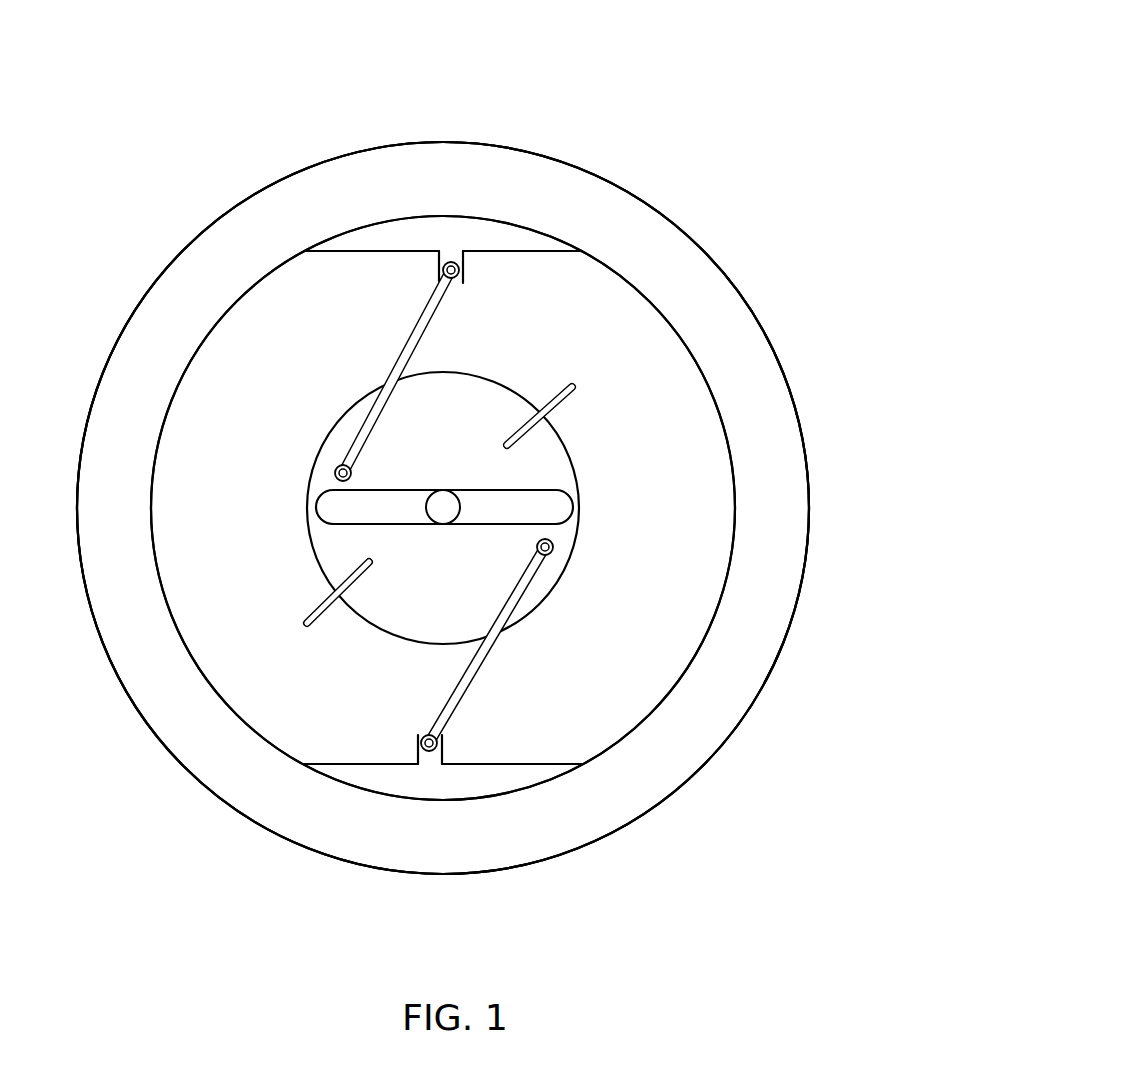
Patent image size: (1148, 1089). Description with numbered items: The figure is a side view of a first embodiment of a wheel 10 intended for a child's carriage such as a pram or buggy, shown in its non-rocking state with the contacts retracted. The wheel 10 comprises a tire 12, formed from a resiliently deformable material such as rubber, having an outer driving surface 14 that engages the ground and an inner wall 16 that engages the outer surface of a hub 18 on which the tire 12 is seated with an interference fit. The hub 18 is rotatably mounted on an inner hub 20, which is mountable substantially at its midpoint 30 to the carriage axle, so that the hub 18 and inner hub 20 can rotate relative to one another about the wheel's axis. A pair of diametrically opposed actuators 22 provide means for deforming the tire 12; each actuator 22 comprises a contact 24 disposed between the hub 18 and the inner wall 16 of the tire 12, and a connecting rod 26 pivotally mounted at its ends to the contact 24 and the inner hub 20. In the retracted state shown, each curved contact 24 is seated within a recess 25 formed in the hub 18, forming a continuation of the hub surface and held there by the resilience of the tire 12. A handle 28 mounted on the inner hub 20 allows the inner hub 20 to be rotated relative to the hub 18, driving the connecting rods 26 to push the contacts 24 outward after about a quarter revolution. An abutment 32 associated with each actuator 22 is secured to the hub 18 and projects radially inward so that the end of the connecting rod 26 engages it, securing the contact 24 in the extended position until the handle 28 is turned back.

The wheel 10 is at (714, 132).
The tire 12 is at (733, 259).
The driving surface 14 is at (800, 412).
The inner wall 16 is at (172, 398).
The hub 18 is at (683, 522).
The inner hub 20 is at (463, 593).
The actuator 22 is at (442, 506).
The contact 24 is at (405, 237).
The recess 25 is at (532, 253).
The connecting rod 26 is at (413, 343).
The handle 28 is at (335, 508).
The midpoint 30 is at (452, 493).
The abutment 32 is at (562, 408).